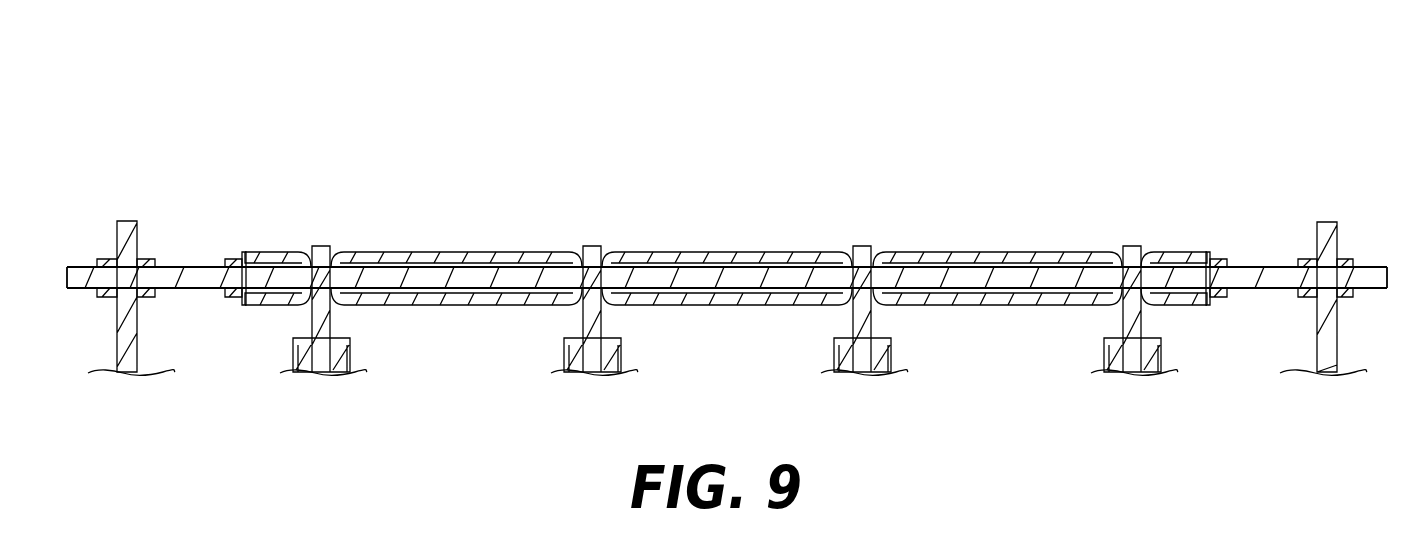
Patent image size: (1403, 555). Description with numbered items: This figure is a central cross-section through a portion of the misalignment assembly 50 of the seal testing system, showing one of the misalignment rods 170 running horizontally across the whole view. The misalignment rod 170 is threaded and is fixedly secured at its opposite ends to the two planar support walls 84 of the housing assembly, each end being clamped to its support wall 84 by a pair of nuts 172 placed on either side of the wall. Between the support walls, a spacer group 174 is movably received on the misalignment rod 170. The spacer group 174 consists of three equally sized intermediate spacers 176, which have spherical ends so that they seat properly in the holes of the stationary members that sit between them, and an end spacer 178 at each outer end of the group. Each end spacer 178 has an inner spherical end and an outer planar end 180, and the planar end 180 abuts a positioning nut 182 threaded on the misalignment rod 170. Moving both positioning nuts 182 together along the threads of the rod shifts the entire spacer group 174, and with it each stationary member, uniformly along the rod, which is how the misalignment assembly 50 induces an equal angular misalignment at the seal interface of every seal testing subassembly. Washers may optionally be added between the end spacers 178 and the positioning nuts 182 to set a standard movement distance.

The misalignment assembly 50 is at (331, 106).
The planar support wall 84 is at (128, 360).
The misalignment rod 170 is at (195, 278).
The nut 172 is at (108, 298).
The spacer group 174 is at (726, 226).
The intermediate spacer 176 is at (468, 262).
The end spacer 178 is at (285, 262).
The planar end 180 is at (240, 307).
The positioning nut 182 is at (232, 258).